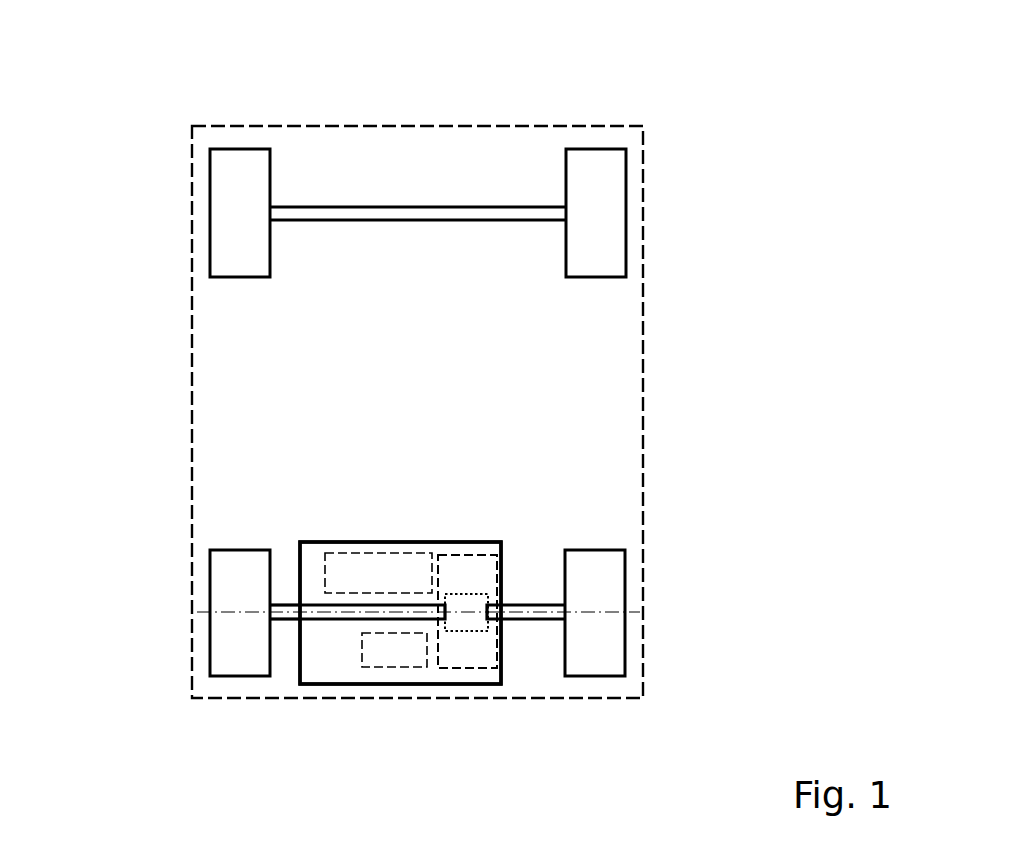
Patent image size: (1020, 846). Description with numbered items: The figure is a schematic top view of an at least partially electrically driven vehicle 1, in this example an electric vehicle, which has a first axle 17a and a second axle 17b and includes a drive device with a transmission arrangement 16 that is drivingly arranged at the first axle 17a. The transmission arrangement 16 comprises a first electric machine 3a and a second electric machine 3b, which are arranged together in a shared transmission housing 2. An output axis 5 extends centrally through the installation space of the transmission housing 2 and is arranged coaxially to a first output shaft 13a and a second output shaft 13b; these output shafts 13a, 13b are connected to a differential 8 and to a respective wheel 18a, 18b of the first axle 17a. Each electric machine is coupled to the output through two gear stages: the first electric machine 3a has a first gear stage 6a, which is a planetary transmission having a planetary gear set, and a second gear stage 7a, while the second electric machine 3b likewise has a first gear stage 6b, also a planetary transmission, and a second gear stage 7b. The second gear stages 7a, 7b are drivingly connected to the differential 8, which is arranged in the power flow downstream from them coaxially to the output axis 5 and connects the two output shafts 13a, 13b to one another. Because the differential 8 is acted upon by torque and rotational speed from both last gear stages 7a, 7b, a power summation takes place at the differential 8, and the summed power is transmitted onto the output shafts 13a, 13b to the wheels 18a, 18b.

The vehicle 1 is at (372, 118).
The transmission housing 2 is at (322, 542).
The first electric machine 3a is at (390, 667).
The second electric machine 3b is at (383, 553).
The output axis 5 is at (253, 615).
The first gear stage 6a is at (462, 670).
The second gear stage 7a is at (467, 611).
The first gear stage 6b is at (450, 557).
The second gear stage 7b is at (467, 611).
The differential 8 is at (473, 593).
The first output shaft 13a is at (285, 622).
The second output shaft 13b is at (537, 622).
The transmission arrangement 16 is at (485, 533).
The first axle 17a is at (175, 613).
The second axle 17b is at (175, 213).
The wheel 18a is at (237, 550).
The wheel 18b is at (593, 676).